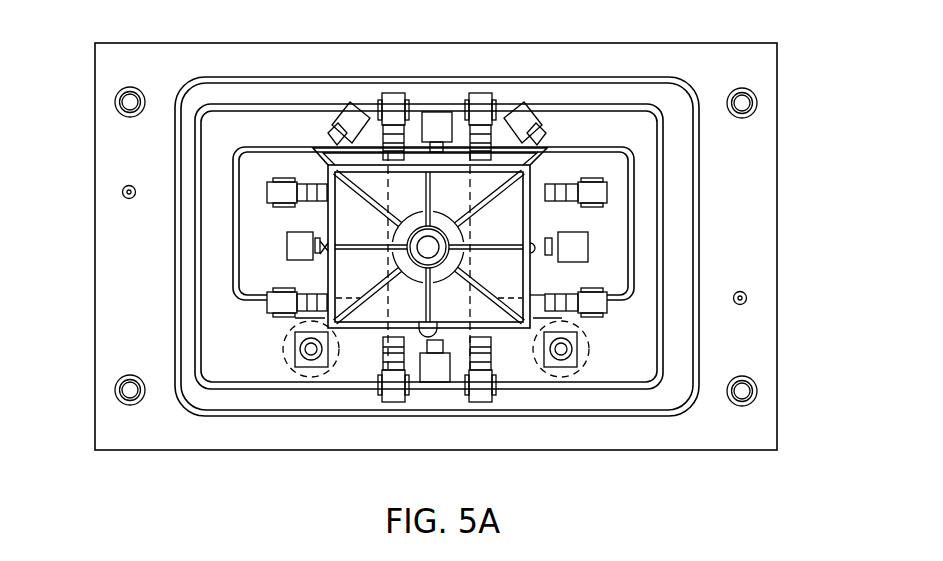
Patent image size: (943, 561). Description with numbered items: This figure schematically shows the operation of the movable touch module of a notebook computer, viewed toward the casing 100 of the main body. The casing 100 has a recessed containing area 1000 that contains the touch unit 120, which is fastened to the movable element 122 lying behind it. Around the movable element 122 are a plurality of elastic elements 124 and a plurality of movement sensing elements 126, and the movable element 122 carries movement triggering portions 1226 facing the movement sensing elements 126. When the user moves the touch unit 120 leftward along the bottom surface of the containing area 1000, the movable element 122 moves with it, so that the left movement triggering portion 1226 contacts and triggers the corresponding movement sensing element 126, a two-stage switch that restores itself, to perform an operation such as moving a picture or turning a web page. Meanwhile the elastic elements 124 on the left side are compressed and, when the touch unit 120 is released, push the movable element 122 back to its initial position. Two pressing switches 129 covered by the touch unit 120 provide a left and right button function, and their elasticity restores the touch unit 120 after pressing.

The casing 100 is at (725, 244).
The containing area 1000 is at (680, 165).
The touch unit 120 is at (630, 130).
The movable element 122 is at (335, 285).
The elastic elements 124 is at (280, 190).
The movement sensing elements 126 is at (302, 243).
The movement triggering portions 1226 is at (318, 252).
The pressing switches 129 is at (293, 353).